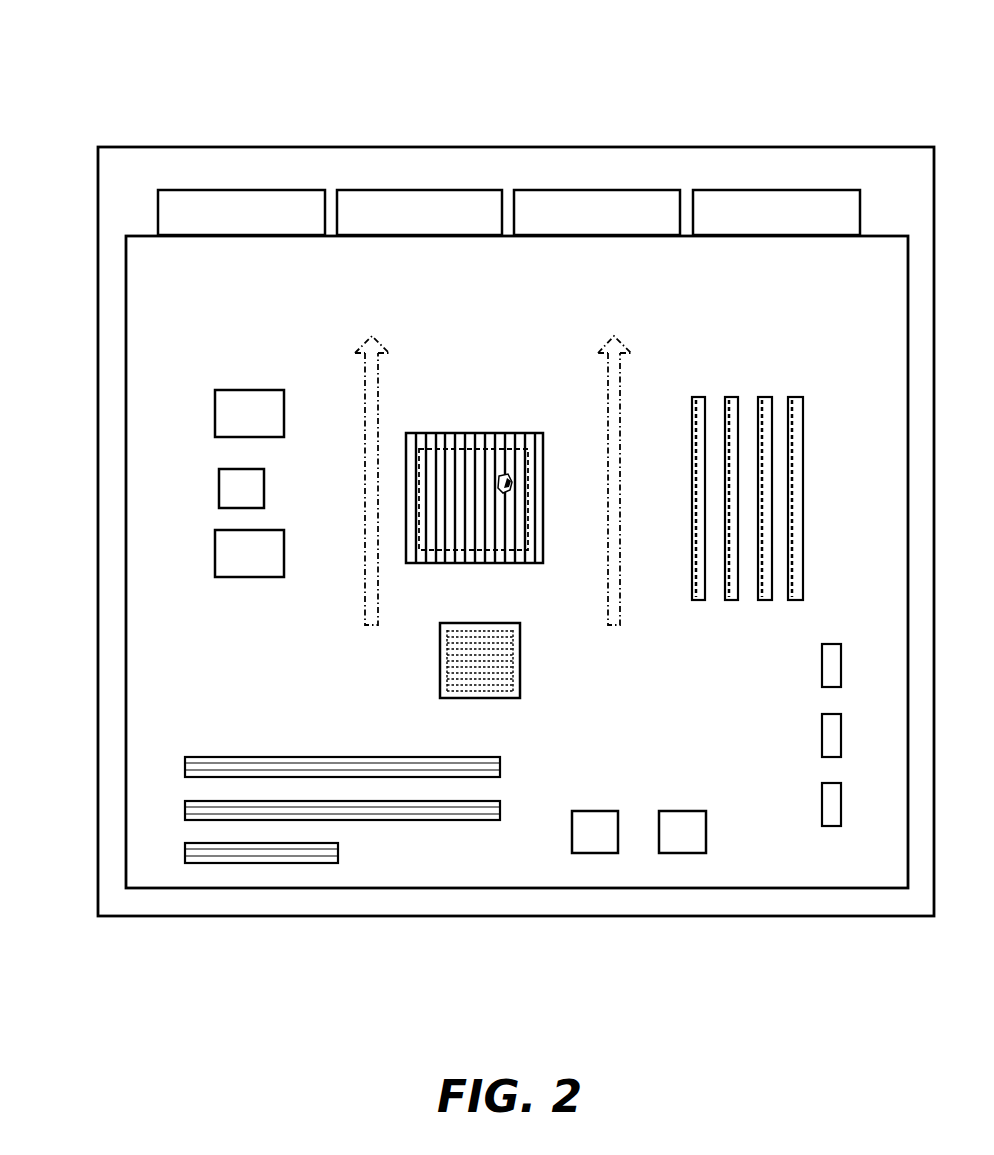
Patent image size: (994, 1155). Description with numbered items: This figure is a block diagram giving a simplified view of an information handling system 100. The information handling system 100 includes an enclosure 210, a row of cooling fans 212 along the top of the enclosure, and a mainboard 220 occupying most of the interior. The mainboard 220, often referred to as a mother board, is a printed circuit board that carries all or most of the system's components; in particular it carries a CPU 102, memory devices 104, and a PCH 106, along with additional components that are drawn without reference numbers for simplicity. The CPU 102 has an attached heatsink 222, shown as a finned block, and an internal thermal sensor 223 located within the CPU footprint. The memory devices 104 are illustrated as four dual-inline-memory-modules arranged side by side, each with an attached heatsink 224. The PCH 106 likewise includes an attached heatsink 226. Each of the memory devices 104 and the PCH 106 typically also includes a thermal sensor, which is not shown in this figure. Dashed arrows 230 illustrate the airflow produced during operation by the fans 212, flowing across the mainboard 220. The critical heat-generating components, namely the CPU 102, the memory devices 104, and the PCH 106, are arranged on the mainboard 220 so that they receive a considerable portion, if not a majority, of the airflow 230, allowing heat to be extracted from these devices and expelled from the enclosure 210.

The information handling system 100 is at (828, 105).
The enclosure 210 is at (100, 220).
The cooling fan 212 is at (182, 191).
The mainboard 220 is at (126, 385).
The arrows 230 is at (365, 402).
The heatsink 222 is at (443, 433).
The CPU 102 is at (488, 448).
The thermal sensor 223 is at (513, 493).
The heatsink 226 is at (472, 622).
The PCH 106 is at (502, 630).
The heatsink 224 is at (790, 400).
The memory devices 104 is at (800, 400).